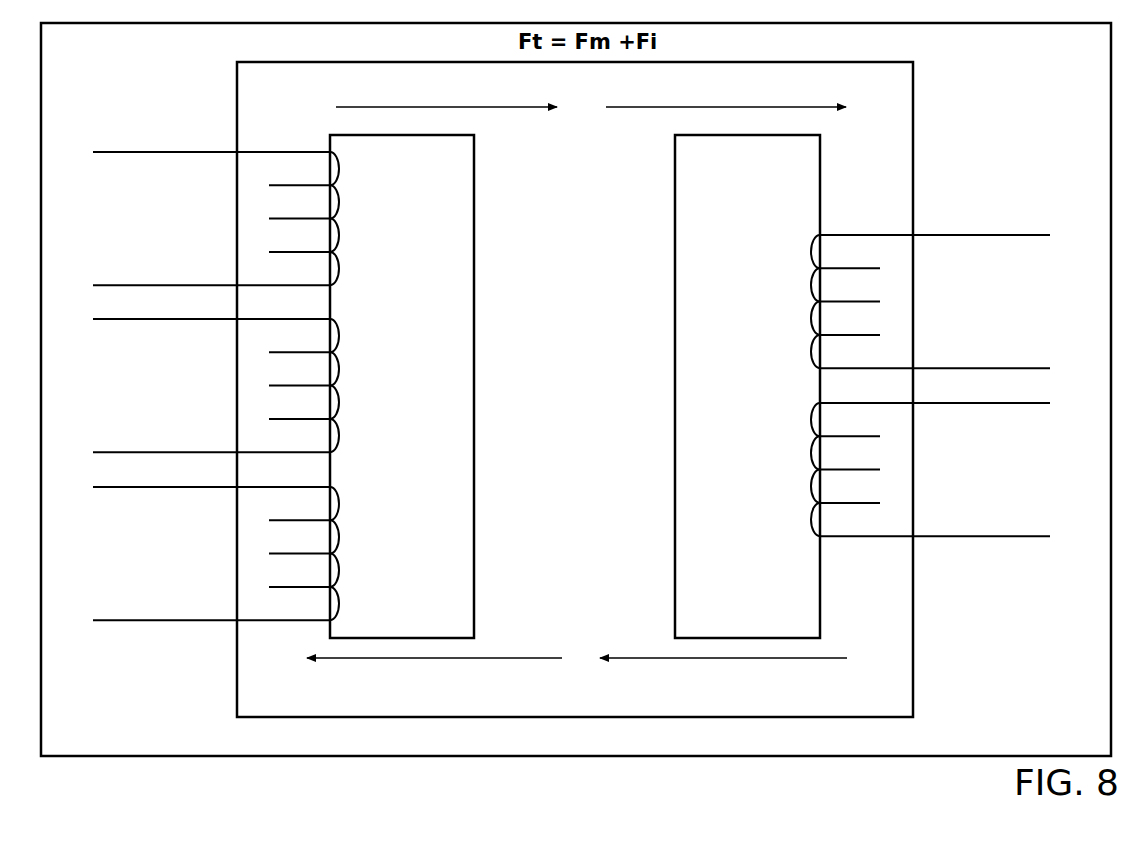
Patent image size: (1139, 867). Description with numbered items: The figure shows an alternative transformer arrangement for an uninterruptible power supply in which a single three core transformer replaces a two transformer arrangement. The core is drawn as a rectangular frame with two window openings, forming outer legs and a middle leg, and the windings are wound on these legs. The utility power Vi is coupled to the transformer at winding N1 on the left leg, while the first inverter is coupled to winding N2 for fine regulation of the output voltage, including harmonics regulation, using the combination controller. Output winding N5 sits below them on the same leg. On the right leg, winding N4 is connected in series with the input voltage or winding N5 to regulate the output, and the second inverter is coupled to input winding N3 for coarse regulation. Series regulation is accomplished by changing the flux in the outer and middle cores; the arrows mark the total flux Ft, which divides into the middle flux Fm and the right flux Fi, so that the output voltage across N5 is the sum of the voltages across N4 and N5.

The winding N1 is at (216, 218).
The winding N2 is at (216, 385).
The input winding N3 is at (930, 469).
The winding N4 is at (930, 301).
The winding N5 is at (216, 553).
The total magnetic flux Ft is at (291, 657).
The main magnetic flux Fm is at (570, 627).
The leakage/inductive magnetic flux Fi is at (847, 627).